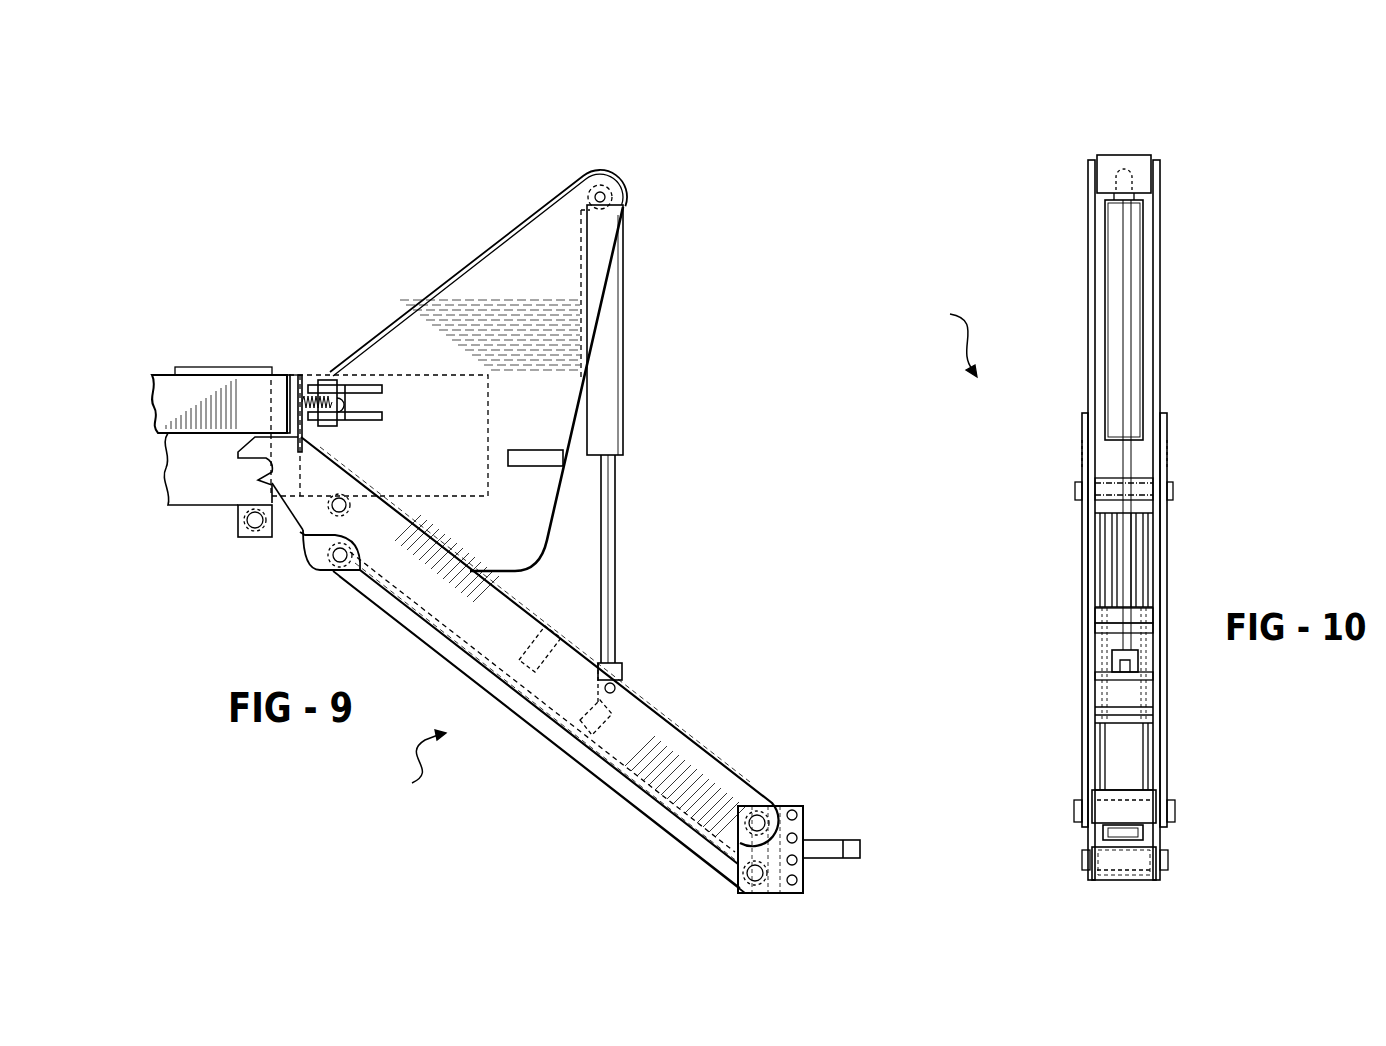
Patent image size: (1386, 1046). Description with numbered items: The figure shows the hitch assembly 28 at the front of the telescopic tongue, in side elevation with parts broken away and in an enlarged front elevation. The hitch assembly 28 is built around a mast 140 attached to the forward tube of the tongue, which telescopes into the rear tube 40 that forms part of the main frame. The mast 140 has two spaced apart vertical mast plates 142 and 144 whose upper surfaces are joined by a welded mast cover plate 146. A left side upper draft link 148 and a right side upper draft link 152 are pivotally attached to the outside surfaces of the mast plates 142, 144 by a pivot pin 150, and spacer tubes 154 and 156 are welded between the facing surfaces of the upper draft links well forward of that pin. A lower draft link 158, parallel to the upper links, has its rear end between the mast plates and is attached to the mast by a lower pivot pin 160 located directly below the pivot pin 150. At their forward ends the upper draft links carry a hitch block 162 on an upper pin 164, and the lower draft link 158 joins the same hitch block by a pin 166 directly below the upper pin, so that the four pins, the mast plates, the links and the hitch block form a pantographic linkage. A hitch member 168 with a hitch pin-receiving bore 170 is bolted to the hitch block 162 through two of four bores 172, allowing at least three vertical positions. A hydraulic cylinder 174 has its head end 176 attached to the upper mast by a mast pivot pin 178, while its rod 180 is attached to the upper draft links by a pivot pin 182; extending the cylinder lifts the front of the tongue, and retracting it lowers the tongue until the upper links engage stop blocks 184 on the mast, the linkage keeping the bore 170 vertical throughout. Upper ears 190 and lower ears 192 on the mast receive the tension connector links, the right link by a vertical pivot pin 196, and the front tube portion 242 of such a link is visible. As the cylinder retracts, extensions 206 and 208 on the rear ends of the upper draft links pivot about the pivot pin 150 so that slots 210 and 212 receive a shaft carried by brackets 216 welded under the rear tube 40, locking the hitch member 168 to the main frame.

In FIG. 9, the hitch assembly 28 is at (416, 766).
In FIG. 10, the hitch assembly 28 is at (948, 335).
In FIG. 9, the rear tube 40 is at (178, 510).
In FIG. 10, the mast 140 is at (1090, 265).
In FIG. 10, the mast plate 142 is at (1162, 288).
In FIG. 9, the mast plate 144 is at (518, 246).
In FIG. 10, the mast plate 144 is at (1088, 290).
In FIG. 9, the mast cover plate 146 is at (432, 298).
In FIG. 10, the left side upper draft link 148 is at (1168, 765).
In FIG. 9, the pivot pin 150 is at (335, 512).
In FIG. 9, the right side upper draft link 152 is at (720, 765).
In FIG. 10, the right side upper draft link 152 is at (1086, 590).
In FIG. 9, the spacer tube 154 is at (560, 630).
In FIG. 9, the spacer tube 156 is at (578, 735).
In FIG. 9, the lower draft link 158 is at (597, 775).
In FIG. 9, the lower pivot pin 160 is at (337, 562).
In FIG. 9, the hitch block 162 is at (805, 810).
In FIG. 10, the hitch block 162 is at (1120, 868).
In FIG. 9, the upper pin 164 is at (762, 815).
In FIG. 10, the upper pin 164 is at (1176, 812).
In FIG. 9, the pin 166 is at (746, 873).
In FIG. 10, the pin 166 is at (1178, 862).
In FIG. 9, the hitch member 168 is at (862, 848).
In FIG. 10, the hitch member 168 is at (1108, 833).
In FIG. 9, the hitch pin-receiving bore 170 is at (825, 850).
In FIG. 9, the bores 172 is at (797, 882).
In FIG. 9, the hydraulic cylinder 174 is at (625, 330).
In FIG. 10, the hydraulic cylinder 174 is at (1122, 328).
In FIG. 9, the head end 176 is at (578, 212).
In FIG. 10, the head end 176 is at (1100, 200).
In FIG. 9, the mast pivot pin 178 is at (603, 198).
In FIG. 9, the rod 180 is at (612, 505).
In FIG. 9, the pivot pin 182 is at (618, 690).
In FIG. 9, the stop blocks 184 is at (525, 450).
In FIG. 9, the upper ears 190 is at (348, 384).
In FIG. 9, the lower ears 192 is at (356, 422).
In FIG. 9, the vertical pivot pin 196 is at (316, 380).
In FIG. 10, the extension 206 is at (1166, 420).
In FIG. 9, the extension 208 is at (288, 436).
In FIG. 10, the extension 208 is at (1084, 420).
In FIG. 10, the slot 210 is at (1167, 450).
In FIG. 9, the slot 212 is at (258, 482).
In FIG. 10, the slot 212 is at (1082, 448).
In FIG. 9, the brackets 216 is at (255, 530).
In FIG. 9, the front tube portion 242 is at (167, 366).